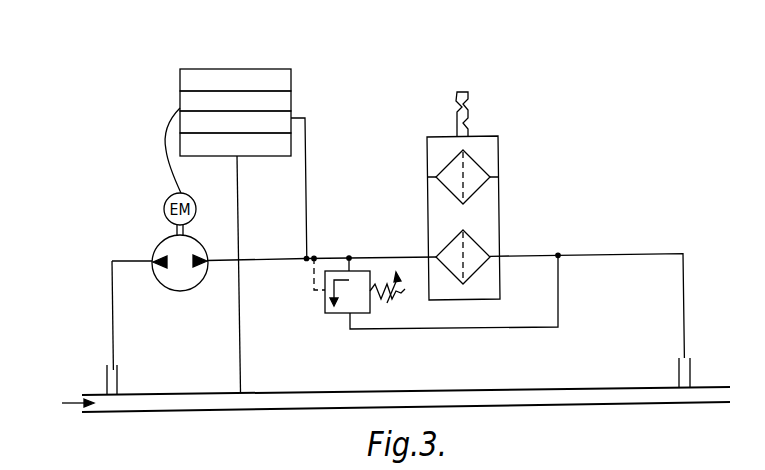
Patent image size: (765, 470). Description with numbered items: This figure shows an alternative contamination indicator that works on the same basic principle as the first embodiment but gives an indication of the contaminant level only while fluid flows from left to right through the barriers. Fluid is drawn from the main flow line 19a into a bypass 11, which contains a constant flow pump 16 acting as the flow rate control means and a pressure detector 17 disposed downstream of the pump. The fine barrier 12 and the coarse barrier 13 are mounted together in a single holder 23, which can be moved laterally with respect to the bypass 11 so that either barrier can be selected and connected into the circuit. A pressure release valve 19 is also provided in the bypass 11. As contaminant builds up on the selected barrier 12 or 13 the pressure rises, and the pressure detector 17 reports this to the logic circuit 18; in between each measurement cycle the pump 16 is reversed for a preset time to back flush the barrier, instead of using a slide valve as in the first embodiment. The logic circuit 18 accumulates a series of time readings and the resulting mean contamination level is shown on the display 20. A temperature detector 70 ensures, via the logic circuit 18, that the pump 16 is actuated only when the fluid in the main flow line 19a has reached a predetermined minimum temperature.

The bypass 11 is at (644, 254).
The fine barrier 12 is at (483, 246).
The coarse barrier 13 is at (484, 165).
The constant flow pump 16 is at (199, 283).
The pressure detector 17 is at (292, 112).
The logic circuit 18 is at (180, 97).
The pressure release valve 19 is at (327, 312).
The main flow line 19a is at (619, 402).
The display 20 is at (221, 70).
The holder 23 is at (484, 217).
The temperature detector 70 is at (219, 157).